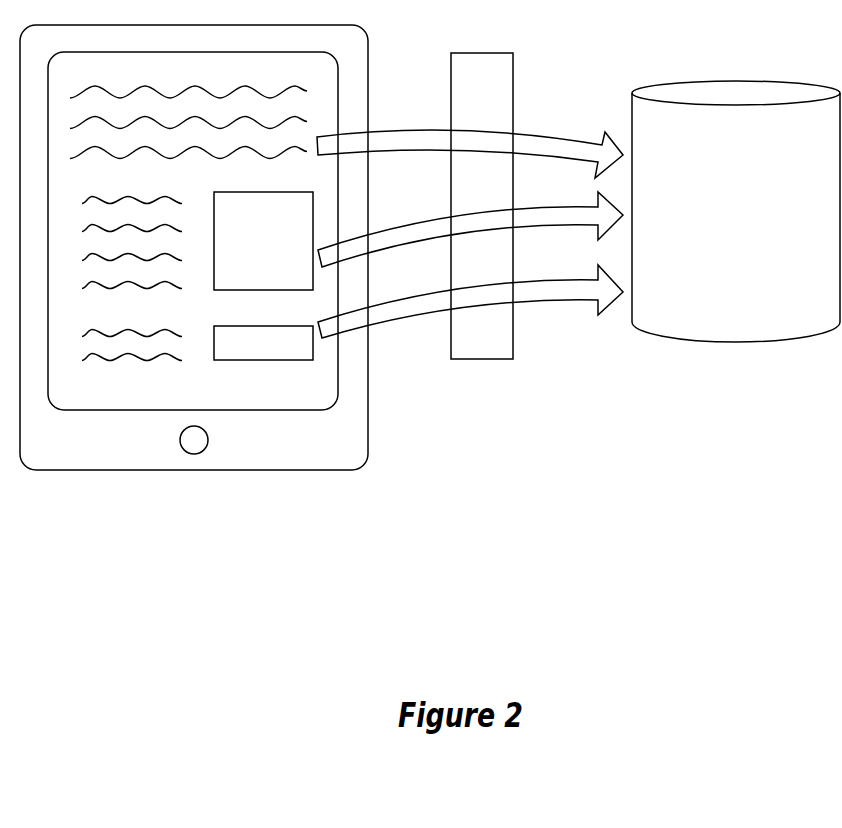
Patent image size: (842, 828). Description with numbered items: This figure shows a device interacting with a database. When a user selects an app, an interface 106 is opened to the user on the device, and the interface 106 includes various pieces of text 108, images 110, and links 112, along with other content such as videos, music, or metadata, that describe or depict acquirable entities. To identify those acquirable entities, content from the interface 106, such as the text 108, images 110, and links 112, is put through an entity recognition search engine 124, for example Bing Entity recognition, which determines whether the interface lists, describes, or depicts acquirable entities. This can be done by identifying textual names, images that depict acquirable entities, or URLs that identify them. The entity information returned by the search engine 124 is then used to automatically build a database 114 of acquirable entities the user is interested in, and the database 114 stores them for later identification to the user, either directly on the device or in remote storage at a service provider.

The interface 106 is at (322, 182).
The text 108 is at (322, 72).
The images 110 is at (263, 241).
The links 112 is at (263, 343).
The entity recognition search engine 124 is at (482, 206).
The database 114 is at (736, 211).